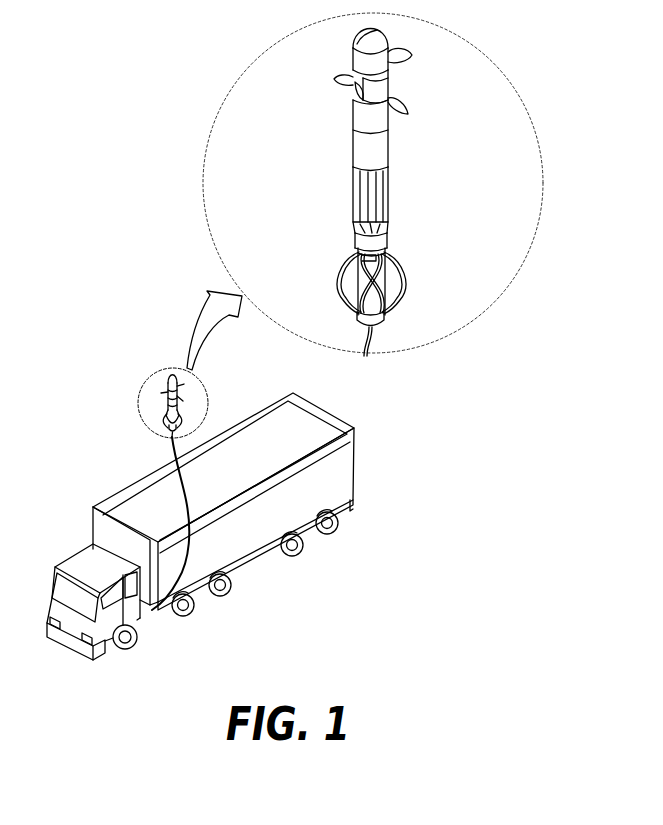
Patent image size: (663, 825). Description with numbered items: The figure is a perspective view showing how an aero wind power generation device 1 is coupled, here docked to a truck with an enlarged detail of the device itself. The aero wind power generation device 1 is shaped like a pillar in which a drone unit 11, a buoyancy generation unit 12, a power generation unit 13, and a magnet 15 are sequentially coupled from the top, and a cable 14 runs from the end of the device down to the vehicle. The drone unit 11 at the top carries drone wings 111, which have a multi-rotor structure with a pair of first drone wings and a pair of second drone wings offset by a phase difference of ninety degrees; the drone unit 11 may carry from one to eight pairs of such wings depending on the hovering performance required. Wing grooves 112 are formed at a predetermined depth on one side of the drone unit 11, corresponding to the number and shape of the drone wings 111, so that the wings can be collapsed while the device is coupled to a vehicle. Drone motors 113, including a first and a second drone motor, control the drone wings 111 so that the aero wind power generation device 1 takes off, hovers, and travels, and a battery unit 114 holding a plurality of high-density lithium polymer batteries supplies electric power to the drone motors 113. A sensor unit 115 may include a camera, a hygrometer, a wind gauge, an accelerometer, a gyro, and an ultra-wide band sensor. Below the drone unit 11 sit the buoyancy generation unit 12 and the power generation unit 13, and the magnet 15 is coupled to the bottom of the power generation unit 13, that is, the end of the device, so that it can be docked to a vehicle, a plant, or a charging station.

The aero wind power generation device 1 is at (255, 20).
The drone unit 11 is at (426, 115).
The drone wings 111 is at (404, 56).
The wing grooves 112 is at (351, 94).
The drone motors 113 is at (385, 87).
The battery unit 114 is at (385, 148).
The sensor unit 115 is at (352, 60).
The buoyancy generation unit 12 is at (360, 193).
The power generation unit 13 is at (408, 266).
The cable 14 is at (374, 334).
The magnet 15 is at (358, 316).